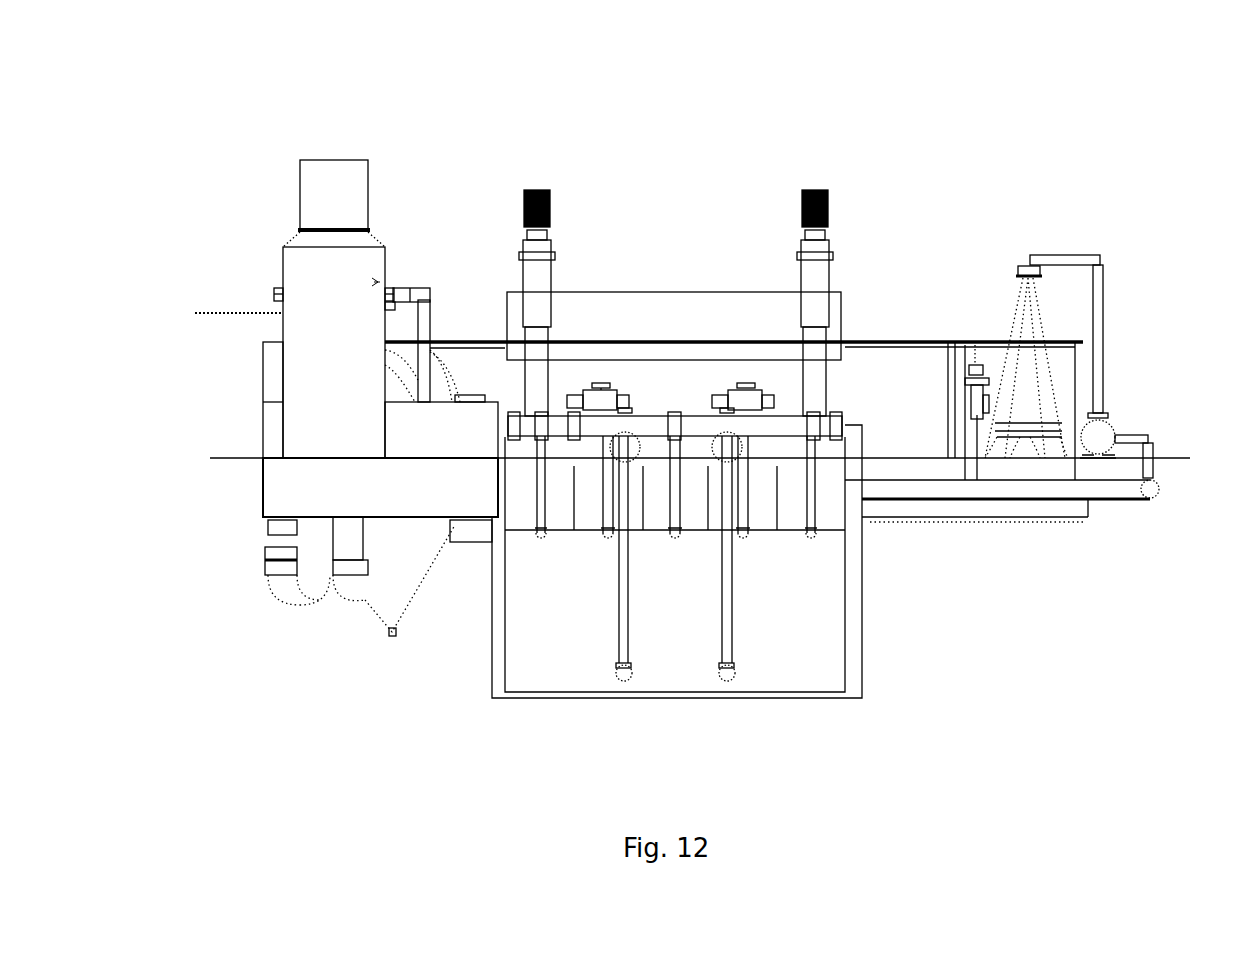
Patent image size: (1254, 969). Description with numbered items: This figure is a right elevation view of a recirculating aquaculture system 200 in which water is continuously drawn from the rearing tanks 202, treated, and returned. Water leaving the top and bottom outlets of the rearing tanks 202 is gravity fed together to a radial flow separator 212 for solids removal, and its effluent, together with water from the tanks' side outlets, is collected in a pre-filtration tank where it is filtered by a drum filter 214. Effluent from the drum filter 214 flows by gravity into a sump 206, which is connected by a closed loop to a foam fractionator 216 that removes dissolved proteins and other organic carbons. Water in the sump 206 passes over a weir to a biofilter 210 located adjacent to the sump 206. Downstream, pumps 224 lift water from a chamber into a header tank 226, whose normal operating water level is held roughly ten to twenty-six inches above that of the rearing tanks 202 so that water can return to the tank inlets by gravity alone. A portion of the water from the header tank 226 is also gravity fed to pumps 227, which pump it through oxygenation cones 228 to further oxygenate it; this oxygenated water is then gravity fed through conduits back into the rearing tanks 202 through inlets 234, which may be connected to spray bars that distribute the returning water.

The recirculating aquaculture system 200 is at (728, 128).
The rearing tanks 202 is at (932, 340).
The sump 206 is at (263, 423).
The biofilter 210 is at (862, 598).
The radial flow separator 212 is at (375, 612).
The drum filter 214 is at (433, 375).
The foam fractionator 216 is at (195, 313).
The pumps 224 is at (536, 188).
The header tank 226 is at (668, 290).
The pumps 227 is at (1105, 428).
The oxygenation cones 228 is at (1040, 322).
The inlets 234 is at (963, 345).